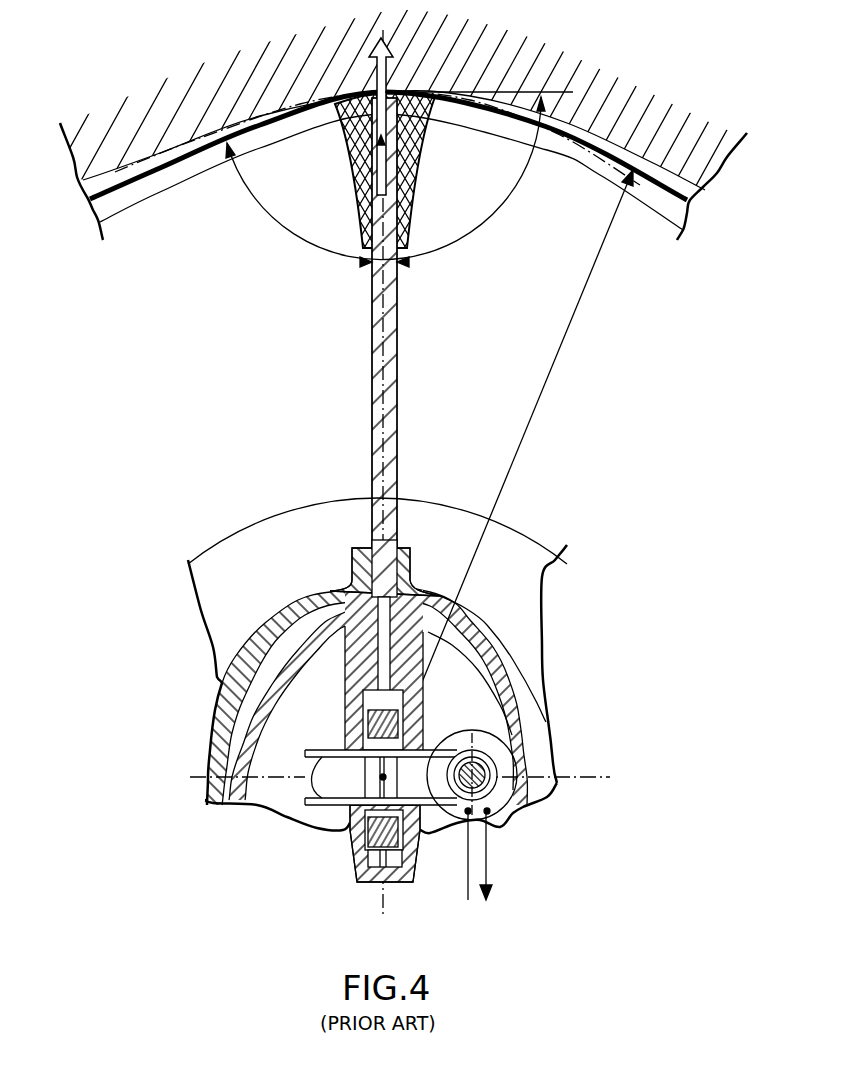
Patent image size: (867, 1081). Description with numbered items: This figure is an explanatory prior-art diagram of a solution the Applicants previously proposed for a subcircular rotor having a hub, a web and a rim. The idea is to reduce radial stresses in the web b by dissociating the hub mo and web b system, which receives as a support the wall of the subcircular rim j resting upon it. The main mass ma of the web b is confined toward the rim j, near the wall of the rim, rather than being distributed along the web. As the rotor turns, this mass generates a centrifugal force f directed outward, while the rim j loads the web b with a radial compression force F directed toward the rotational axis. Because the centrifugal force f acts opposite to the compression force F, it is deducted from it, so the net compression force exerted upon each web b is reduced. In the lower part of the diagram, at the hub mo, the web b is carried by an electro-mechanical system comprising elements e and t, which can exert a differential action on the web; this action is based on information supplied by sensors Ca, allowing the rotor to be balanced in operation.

The centrifugal force f is at (381, 101).
The subcircular rim j is at (607, 127).
The main mass of the web ma is at (418, 106).
The radial compression force F is at (399, 179).
The web b is at (397, 368).
The hub mo is at (507, 657).
The electro-mechanical system element t is at (380, 673).
The electro-mechanical system element e is at (352, 838).
The sensors Ca is at (476, 873).